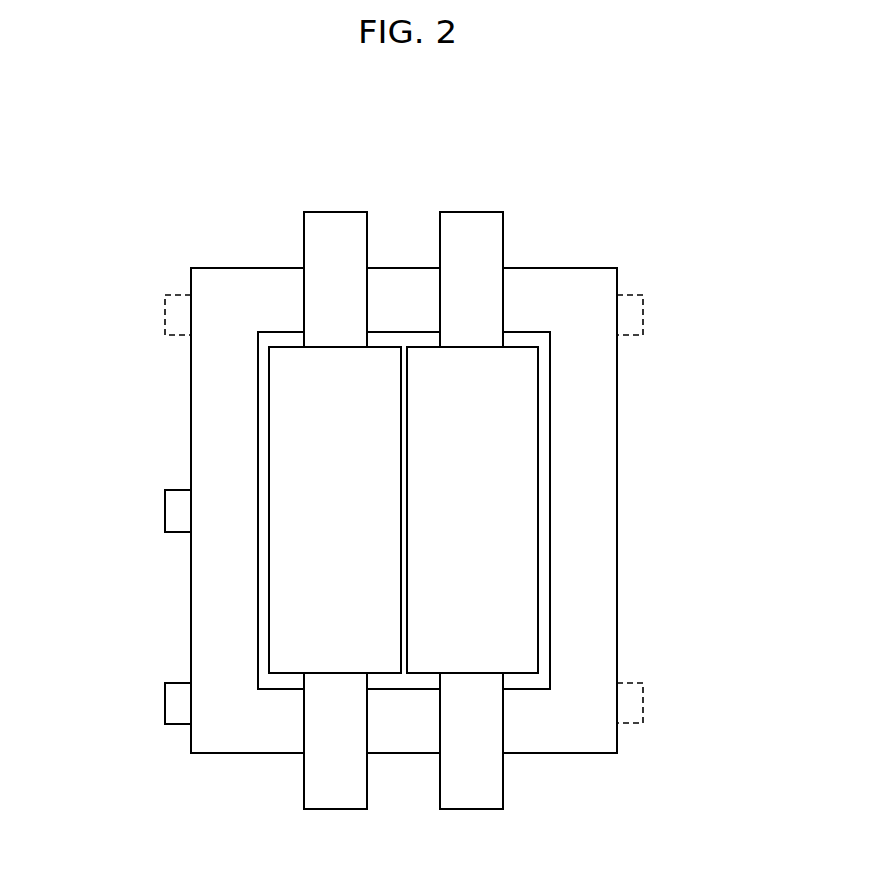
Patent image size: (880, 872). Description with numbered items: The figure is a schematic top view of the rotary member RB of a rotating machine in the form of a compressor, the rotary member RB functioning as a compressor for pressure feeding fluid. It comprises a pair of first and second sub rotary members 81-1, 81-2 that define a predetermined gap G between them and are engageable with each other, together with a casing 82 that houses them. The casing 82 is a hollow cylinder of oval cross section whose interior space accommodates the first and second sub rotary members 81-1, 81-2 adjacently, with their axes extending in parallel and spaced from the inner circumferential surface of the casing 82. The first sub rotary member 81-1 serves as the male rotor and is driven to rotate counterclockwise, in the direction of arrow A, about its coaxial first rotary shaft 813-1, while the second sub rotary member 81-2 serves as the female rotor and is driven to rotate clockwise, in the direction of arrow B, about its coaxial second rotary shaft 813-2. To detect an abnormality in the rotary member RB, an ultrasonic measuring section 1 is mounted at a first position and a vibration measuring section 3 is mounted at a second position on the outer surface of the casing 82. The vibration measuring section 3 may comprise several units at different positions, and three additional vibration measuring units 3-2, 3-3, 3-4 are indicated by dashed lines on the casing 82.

The rotary member RB is at (567, 150).
The casing 82 is at (593, 362).
The first rotary shaft 813-1 is at (304, 240).
The second rotary shaft 813-2 is at (503, 240).
The first sub rotary member 81-1 is at (297, 444).
The second sub rotary member 81-2 is at (513, 543).
The vibration measuring unit 3-2 is at (172, 294).
The vibration measuring unit 3-4 is at (634, 294).
The vibration measuring unit 3-3 is at (630, 724).
The ultrasonic measuring section 1 is at (175, 532).
The vibration measuring section 3 is at (172, 726).
The arrow A is at (378, 227).
The arrow B is at (520, 228).
The gap G is at (404, 337).